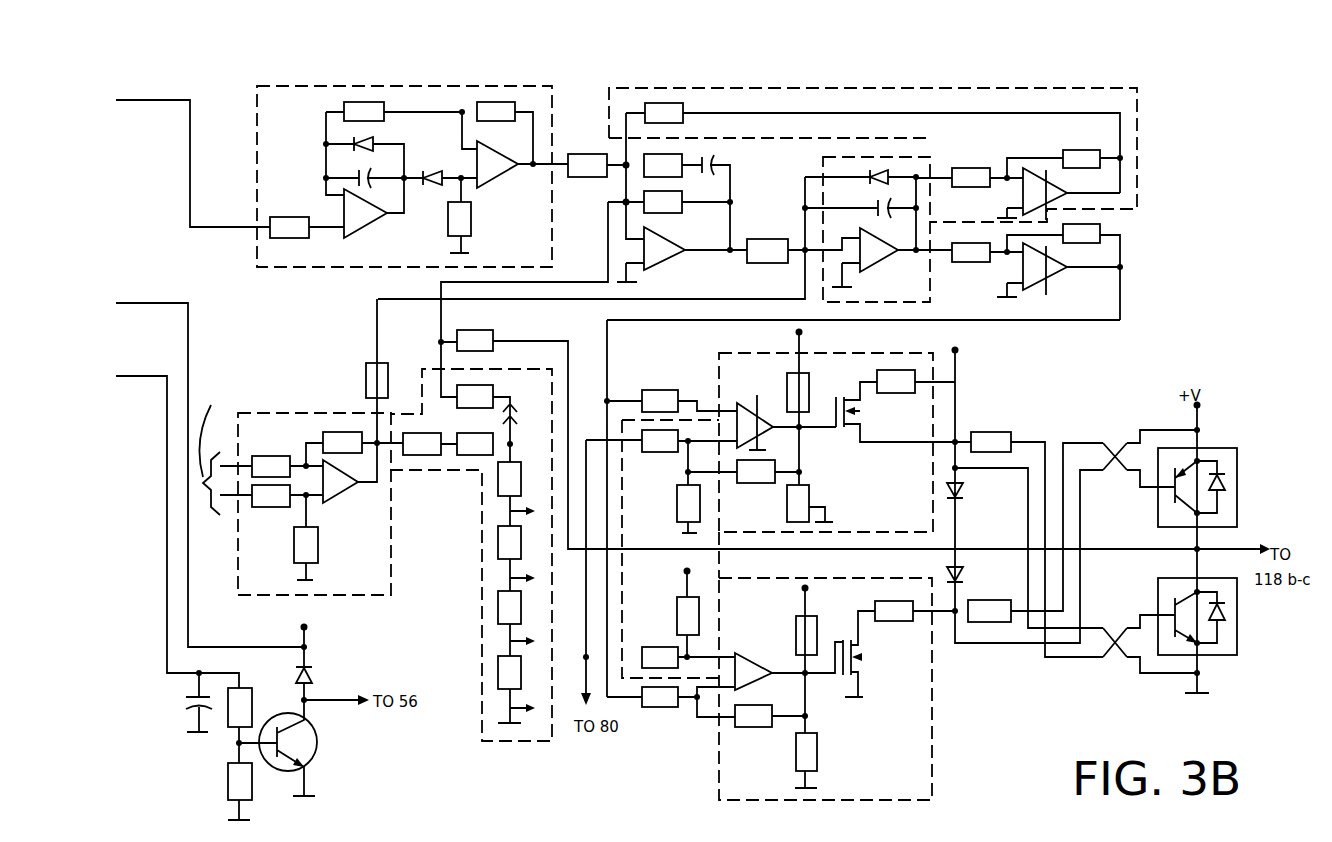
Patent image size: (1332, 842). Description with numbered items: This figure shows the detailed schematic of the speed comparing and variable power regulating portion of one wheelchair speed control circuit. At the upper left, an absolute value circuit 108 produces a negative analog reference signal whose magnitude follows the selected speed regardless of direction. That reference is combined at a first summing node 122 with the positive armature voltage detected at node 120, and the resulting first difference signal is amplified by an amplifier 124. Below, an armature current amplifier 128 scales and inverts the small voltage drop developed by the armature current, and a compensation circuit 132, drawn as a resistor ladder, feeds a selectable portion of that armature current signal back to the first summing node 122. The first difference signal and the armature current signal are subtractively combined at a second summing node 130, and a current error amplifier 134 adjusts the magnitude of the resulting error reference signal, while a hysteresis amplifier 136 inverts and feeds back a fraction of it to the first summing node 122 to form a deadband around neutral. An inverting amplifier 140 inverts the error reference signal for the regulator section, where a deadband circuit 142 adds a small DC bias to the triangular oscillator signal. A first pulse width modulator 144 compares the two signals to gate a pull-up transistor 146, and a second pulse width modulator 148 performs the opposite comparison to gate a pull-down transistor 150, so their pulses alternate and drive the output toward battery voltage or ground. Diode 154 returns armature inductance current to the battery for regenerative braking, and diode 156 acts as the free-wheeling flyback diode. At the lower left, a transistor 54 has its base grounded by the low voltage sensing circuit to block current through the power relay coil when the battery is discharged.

The transistor 54 is at (317, 750).
The absolute value circuit 108 is at (257, 131).
The node 120 is at (1197, 549).
The first subtractive combining means or summing node 122 is at (617, 165).
The amplifier 124 is at (668, 254).
The armature current amplifier 128 is at (391, 567).
The second subtractive combining means or summing node 130 is at (805, 249).
The compensation circuit 132 is at (482, 637).
The current error amplifier 134 is at (823, 165).
The hysteresis amplifier 136 is at (1140, 132).
The inverting amplifier 140 is at (1048, 274).
The deadband circuit 142 is at (623, 418).
The first pulse width modulator 144 is at (932, 718).
The pull-up transistor 146 is at (933, 418).
The second pulse width modulator 148 is at (1175, 495).
The pull-down transistor 150 is at (1173, 613).
The diode 154 is at (1237, 480).
The diode 156 is at (1237, 612).